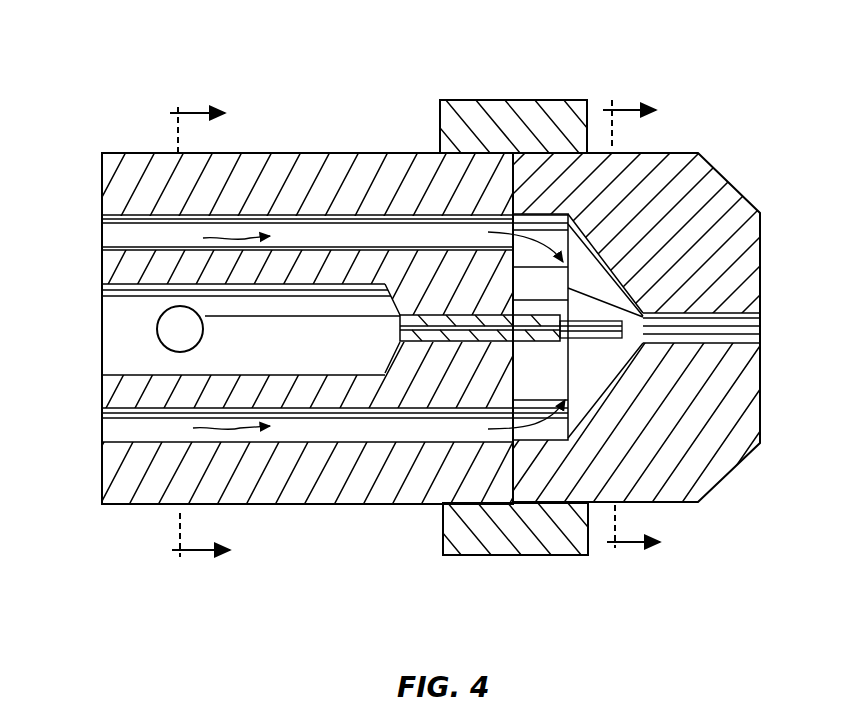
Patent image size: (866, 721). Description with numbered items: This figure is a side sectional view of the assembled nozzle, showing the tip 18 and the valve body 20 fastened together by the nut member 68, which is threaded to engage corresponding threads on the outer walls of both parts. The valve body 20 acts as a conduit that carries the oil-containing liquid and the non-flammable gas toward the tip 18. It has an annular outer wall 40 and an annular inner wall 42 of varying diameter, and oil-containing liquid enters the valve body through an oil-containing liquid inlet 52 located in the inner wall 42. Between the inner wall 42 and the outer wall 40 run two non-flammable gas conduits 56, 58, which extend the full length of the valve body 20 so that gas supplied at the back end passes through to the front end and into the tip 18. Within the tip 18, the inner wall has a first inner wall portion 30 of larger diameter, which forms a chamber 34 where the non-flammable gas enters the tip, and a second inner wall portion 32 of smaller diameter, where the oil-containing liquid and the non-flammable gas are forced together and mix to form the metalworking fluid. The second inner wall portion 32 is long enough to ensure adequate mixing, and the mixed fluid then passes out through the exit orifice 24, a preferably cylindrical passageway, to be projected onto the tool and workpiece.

The tip 18 is at (755, 177).
The valve body 20 is at (333, 114).
The exit orifice 24 is at (767, 322).
The first inner wall portion 30 is at (561, 423).
The second inner wall portion 32 is at (538, 352).
The chamber 34 is at (603, 354).
The valve body outer wall 40 is at (135, 153).
The valve body inner wall 42 is at (152, 375).
The oil-containing liquid inlet 52 is at (160, 328).
The non-flammable gas conduit 56 is at (110, 235).
The non-flammable gas conduit 58 is at (113, 428).
The nut member 68 is at (493, 112).